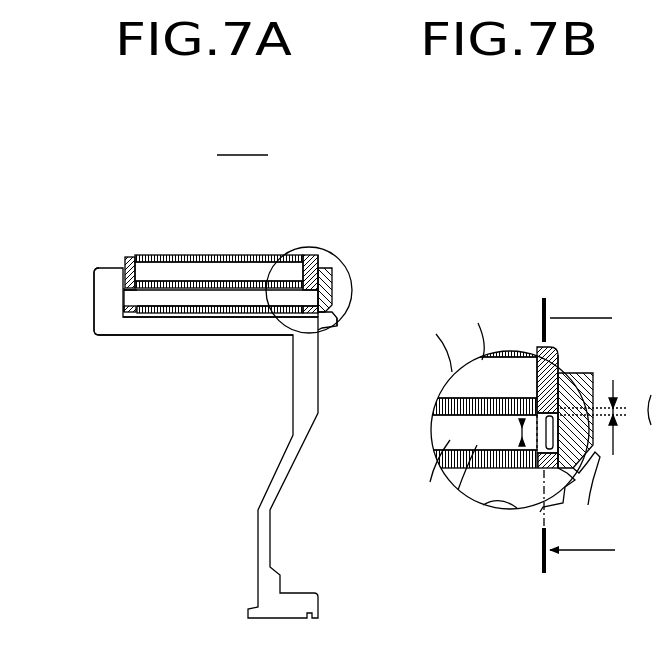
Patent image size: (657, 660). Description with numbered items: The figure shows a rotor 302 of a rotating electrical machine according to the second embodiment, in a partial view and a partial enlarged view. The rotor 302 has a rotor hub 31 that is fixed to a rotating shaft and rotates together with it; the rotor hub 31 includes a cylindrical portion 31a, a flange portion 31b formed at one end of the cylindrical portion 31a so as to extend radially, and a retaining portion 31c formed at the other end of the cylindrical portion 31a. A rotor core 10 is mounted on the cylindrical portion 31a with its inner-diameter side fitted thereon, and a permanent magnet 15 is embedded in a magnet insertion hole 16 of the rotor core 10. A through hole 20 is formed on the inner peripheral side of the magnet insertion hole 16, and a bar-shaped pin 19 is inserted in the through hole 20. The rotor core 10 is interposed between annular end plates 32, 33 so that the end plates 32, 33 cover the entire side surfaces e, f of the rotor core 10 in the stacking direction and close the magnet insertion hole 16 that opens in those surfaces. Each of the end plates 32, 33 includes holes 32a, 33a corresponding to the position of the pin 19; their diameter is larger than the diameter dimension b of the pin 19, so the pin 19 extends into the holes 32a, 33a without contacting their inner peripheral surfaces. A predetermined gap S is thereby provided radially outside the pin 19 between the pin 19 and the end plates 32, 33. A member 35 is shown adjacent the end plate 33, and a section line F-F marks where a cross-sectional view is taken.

In FIG. 7A, the rotor 302 is at (224, 192).
In FIG. 7A, the rotor core 10 is at (221, 292).
In FIG. 7A, the permanent magnet 15 is at (200, 278).
In FIG. 7A, the magnet insertion hole 16 is at (163, 262).
In FIG. 7A, the pin 19 is at (197, 300).
In FIG. 7A, the through hole 20 is at (162, 303).
In FIG. 7A, the rotor hub 31 is at (310, 403).
In FIG. 7A, the cylindrical portion 31a is at (240, 320).
In FIG. 7A, the flange portion 31b is at (107, 310).
In FIG. 7A, the retaining portion 31c is at (337, 307).
In FIG. 7B, the retaining portion 31c is at (588, 480).
In FIG. 7A, the end plate 32 is at (130, 256).
In FIG. 7A, the hole 32a is at (127, 296).
In FIG. 7A, the end plate 33 is at (306, 256).
In FIG. 7B, the end plate 33 is at (538, 350).
In FIG. 7A, the hole 33a is at (317, 272).
In FIG. 7B, the hole 33a is at (559, 377).
In FIG. 7A, the elastic member 35 is at (333, 288).
In FIG. 7B, the elastic member 35 is at (581, 386).
In FIG. 7A, the side surface e is at (336, 322).
In FIG. 7A, the side surface f is at (122, 315).
In FIG. 7B, the line F- F is at (575, 435).
In FIG. 7B, the diameter dimension b is at (512, 430).
In FIG. 7B, the gap S is at (598, 419).